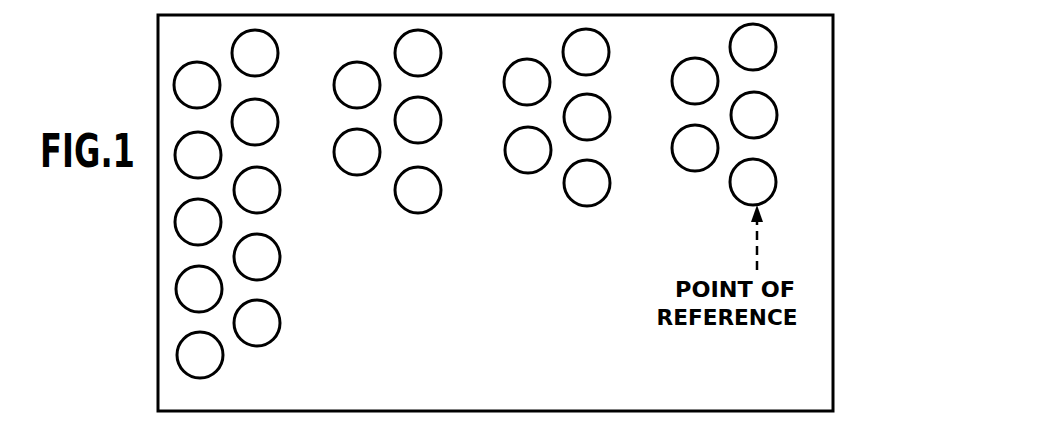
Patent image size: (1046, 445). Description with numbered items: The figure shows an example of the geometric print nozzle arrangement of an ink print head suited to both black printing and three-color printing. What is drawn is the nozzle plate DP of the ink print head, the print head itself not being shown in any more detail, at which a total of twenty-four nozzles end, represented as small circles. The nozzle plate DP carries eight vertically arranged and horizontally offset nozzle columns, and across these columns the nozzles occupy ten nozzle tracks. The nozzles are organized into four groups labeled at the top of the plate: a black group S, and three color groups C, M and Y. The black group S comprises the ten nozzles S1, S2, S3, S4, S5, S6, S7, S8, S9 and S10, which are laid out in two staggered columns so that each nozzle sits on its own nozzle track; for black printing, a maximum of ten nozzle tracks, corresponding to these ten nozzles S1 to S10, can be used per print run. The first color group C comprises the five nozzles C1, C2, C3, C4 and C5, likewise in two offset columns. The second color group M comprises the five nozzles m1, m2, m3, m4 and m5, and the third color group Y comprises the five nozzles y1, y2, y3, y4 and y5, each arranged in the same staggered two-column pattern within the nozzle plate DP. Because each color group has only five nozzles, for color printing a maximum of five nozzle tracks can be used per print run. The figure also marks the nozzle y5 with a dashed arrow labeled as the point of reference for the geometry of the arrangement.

The nozzle plate DP is at (815, 90).
The black nozzle group S is at (210, 38).
The cyan nozzle group C is at (373, 38).
The magenta nozzle group M is at (543, 38).
The yellow nozzle group Y is at (709, 34).
The nozzle S1 is at (255, 53).
The nozzle S2 is at (197, 85).
The nozzle S3 is at (255, 122).
The nozzle S4 is at (198, 155).
The nozzle S5 is at (257, 190).
The nozzle S6 is at (198, 222).
The nozzle S7 is at (257, 257).
The nozzle S8 is at (199, 289).
The nozzle S9 is at (257, 323).
The nozzle S10 is at (200, 355).
The nozzle C1 is at (418, 53).
The nozzle C2 is at (357, 85).
The nozzle C3 is at (418, 120).
The nozzle C4 is at (357, 152).
The nozzle C5 is at (418, 190).
The nozzle m1 is at (586, 52).
The nozzle m2 is at (527, 82).
The nozzle m3 is at (587, 117).
The nozzle m4 is at (528, 150).
The nozzle m5 is at (587, 183).
The nozzle y1 is at (753, 47).
The nozzle y2 is at (695, 81).
The nozzle y3 is at (754, 115).
The nozzle y4 is at (695, 148).
The nozzle y5 is at (753, 182).